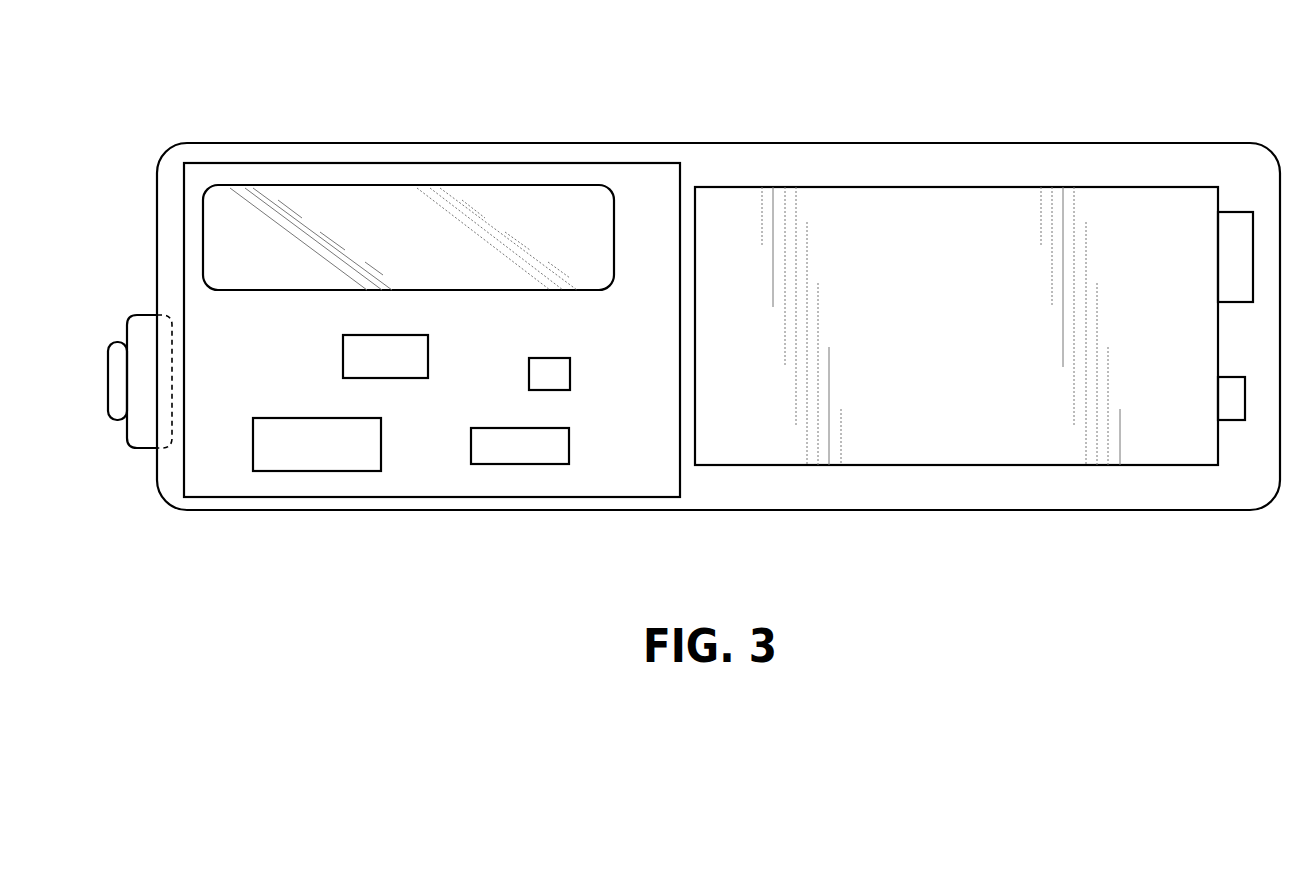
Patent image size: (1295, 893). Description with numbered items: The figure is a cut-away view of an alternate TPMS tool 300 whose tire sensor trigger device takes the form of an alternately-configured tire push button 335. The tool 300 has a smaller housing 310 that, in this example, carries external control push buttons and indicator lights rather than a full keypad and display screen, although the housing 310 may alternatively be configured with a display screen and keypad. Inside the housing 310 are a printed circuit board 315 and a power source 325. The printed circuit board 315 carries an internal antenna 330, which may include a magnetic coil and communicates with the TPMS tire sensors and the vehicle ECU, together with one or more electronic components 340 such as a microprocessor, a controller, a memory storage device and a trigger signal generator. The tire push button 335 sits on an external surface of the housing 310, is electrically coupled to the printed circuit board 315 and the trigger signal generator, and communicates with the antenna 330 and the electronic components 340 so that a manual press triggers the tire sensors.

The TPMS tool 300 is at (111, 50).
The housing 310 is at (157, 237).
The printed circuit board 315 is at (645, 163).
The power source 325 is at (1125, 187).
The internal antenna 330 is at (398, 185).
The tire push button 335 is at (112, 416).
The electronic components 340 is at (529, 374).